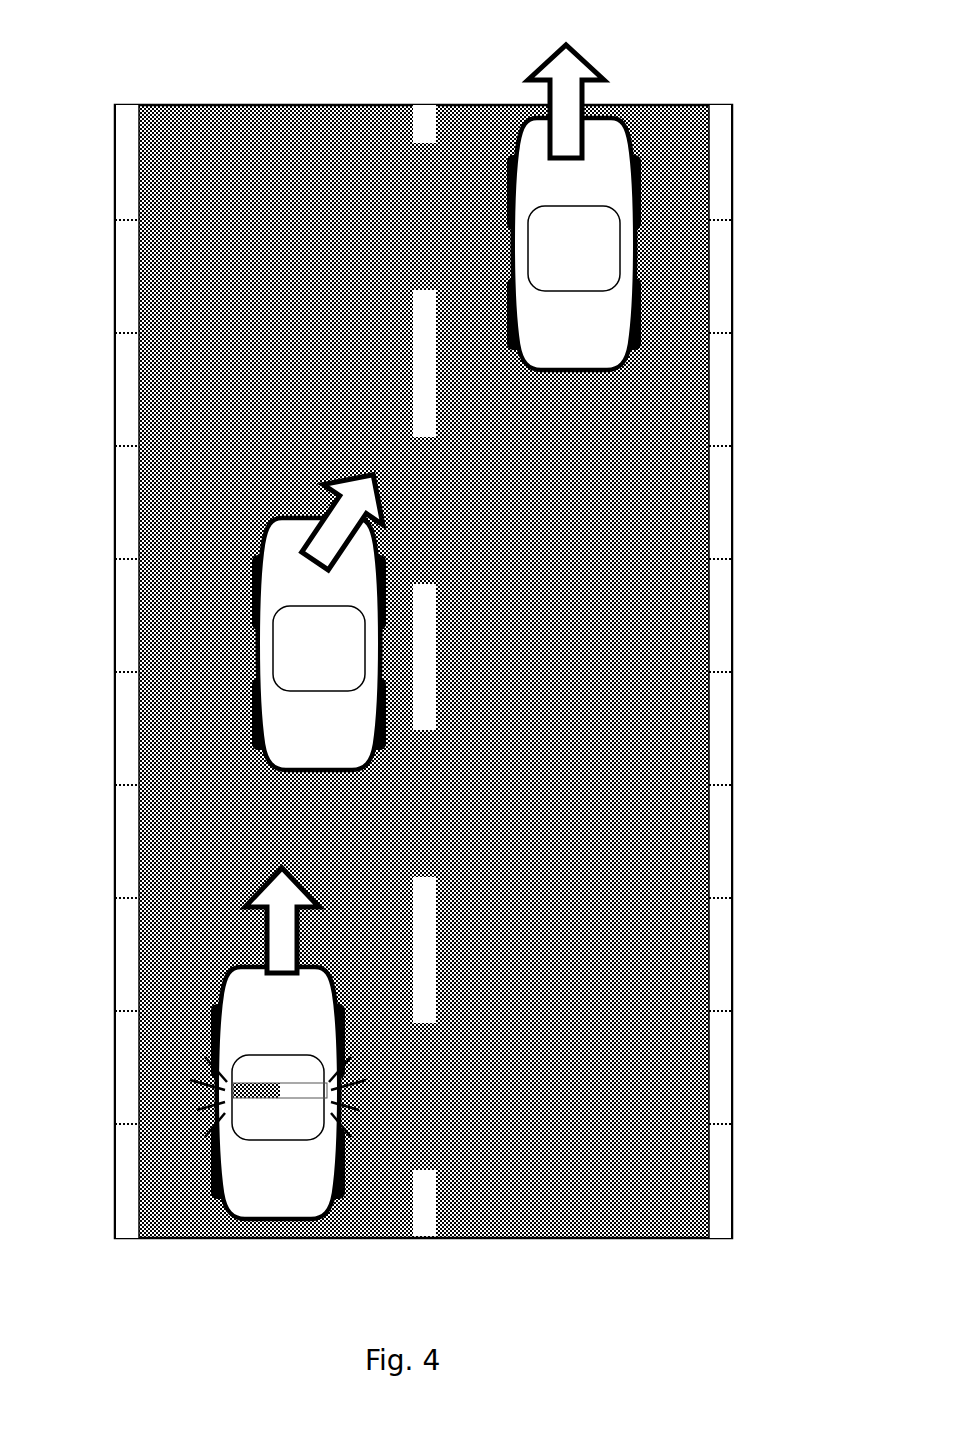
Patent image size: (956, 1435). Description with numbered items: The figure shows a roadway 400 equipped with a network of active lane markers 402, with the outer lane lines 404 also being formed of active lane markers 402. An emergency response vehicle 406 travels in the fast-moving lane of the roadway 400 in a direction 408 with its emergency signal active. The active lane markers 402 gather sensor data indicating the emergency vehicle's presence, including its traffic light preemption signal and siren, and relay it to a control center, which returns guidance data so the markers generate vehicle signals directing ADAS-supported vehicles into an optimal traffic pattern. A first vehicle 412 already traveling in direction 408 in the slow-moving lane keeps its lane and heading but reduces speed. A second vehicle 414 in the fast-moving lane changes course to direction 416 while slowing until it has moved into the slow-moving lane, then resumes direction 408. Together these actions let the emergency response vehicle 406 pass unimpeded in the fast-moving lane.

The roadway 400 is at (235, 140).
The active lane markers 402 is at (117, 153).
The outer lane lines 404 is at (160, 380).
The emergency response vehicle 406 is at (240, 967).
The direction 408 is at (575, 75).
The first vehicle 412 is at (538, 257).
The second vehicle 414 is at (268, 628).
The direction 416 is at (367, 498).